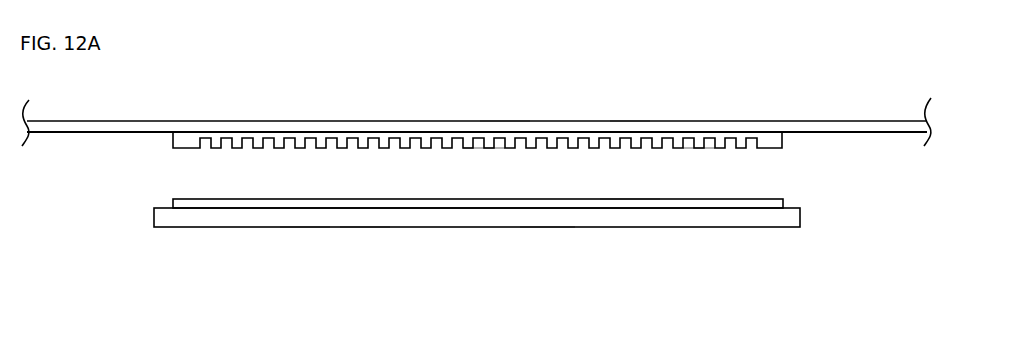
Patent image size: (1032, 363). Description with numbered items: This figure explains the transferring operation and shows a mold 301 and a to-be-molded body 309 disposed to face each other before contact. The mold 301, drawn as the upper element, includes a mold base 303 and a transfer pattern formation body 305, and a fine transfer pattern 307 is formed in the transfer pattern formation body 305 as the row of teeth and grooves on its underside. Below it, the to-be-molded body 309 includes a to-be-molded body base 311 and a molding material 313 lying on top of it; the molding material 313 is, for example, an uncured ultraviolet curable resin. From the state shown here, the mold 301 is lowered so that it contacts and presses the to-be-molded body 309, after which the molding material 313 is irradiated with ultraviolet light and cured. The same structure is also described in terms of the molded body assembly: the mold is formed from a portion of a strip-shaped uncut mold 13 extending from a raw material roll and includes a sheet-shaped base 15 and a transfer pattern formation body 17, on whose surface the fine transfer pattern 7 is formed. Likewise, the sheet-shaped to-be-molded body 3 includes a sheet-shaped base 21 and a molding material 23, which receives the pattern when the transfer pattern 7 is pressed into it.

The to-be-molded body 3 is at (706, 230).
The fine transfer pattern 7 is at (698, 148).
The strip-shaped uncut mold 13 is at (697, 118).
The sheet-shaped base 15 is at (631, 120).
The transfer pattern formation body 17 is at (443, 148).
The sheet-shaped base 21 is at (363, 228).
The molding material 23 is at (312, 198).
The mold 301 is at (350, 118).
The mold base 303 is at (504, 118).
The transfer pattern formation body 305 is at (183, 148).
The fine transfer pattern 307 is at (480, 149).
The to-be-molded body 309 is at (305, 230).
The to-be-molded body base 311 is at (545, 229).
The molding material 313 is at (628, 204).